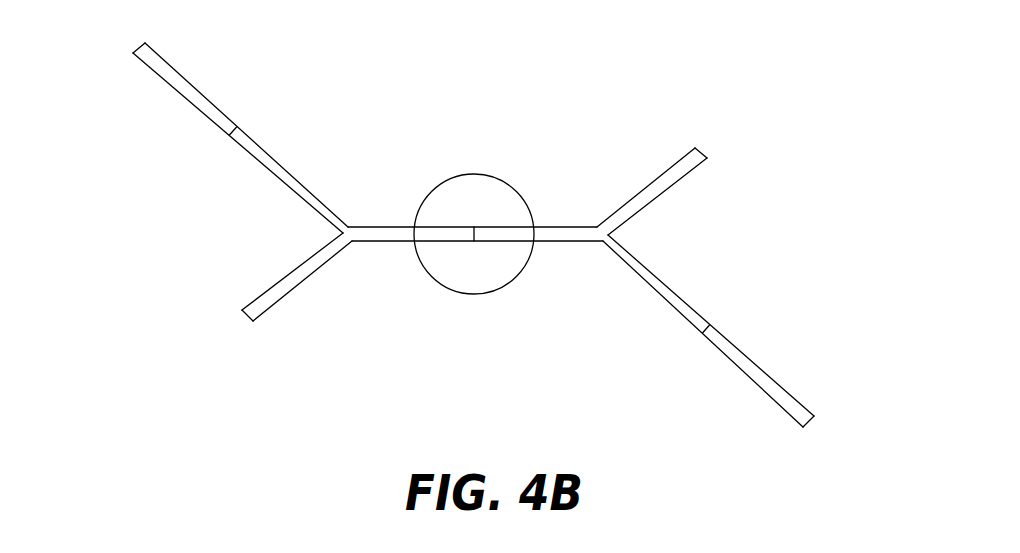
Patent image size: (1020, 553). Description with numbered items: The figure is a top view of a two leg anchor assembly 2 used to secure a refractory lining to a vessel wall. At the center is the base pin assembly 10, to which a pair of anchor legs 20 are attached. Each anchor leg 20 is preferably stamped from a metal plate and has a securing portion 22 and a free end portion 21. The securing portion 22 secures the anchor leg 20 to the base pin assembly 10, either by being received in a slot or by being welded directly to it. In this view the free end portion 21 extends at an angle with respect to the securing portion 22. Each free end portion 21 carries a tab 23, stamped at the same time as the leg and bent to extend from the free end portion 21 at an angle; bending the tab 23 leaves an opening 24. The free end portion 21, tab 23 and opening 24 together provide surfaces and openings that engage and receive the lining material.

The two leg anchor assembly 2 is at (399, 79).
The base pin assembly 10 is at (497, 171).
The anchor leg 20 is at (758, 253).
The free end portion 21 is at (172, 79).
The securing portion 22 is at (567, 228).
The tab 23 is at (683, 157).
The opening 24 is at (287, 181).